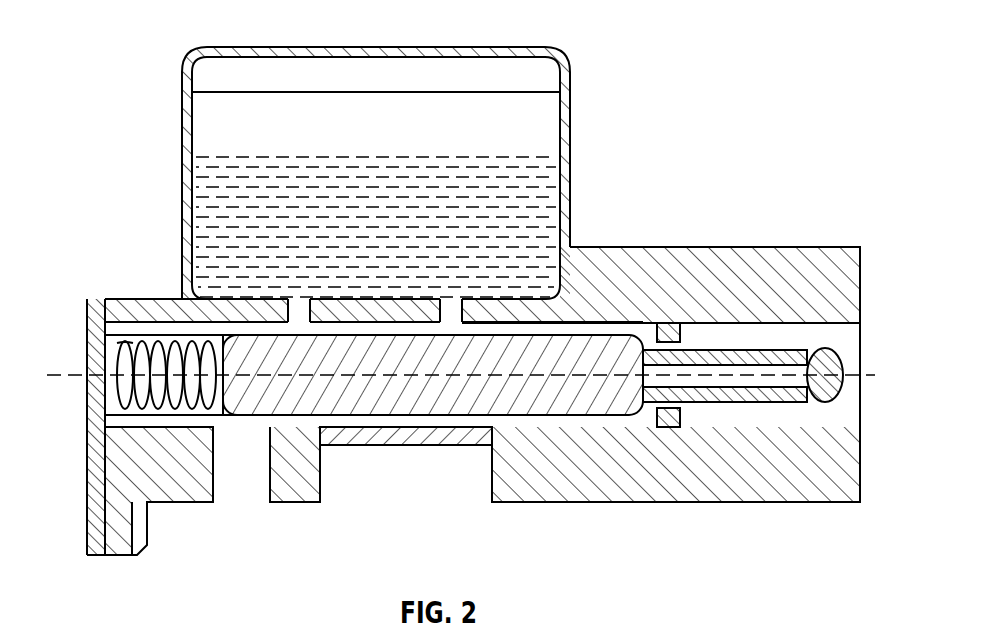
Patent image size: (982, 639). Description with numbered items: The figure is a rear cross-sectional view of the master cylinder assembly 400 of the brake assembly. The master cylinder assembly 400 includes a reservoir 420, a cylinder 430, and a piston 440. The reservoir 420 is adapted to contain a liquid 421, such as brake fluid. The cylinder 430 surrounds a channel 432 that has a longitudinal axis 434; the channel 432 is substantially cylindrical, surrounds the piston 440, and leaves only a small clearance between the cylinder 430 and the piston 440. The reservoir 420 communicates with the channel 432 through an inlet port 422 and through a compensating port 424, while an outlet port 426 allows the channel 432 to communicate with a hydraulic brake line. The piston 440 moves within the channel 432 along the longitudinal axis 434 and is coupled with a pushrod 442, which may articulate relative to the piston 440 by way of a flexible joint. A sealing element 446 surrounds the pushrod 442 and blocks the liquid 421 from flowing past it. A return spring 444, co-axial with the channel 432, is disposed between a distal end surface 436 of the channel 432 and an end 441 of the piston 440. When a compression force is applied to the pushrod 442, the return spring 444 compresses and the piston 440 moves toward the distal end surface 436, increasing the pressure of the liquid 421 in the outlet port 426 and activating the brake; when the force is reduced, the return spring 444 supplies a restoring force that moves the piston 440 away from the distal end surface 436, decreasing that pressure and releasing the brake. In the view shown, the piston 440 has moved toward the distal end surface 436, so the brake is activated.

The master cylinder assembly 400 is at (772, 30).
The reservoir 420 is at (183, 120).
The liquid 421 is at (260, 212).
The inlet port 422 is at (298, 305).
The compensating port 424 is at (450, 305).
The outlet port 426 is at (231, 493).
The cylinder 430 is at (420, 428).
The channel 432 is at (580, 325).
The longitudinal axis 434 is at (68, 375).
The distal end surface 436 is at (108, 395).
The piston 440 is at (340, 407).
The end 441 is at (225, 400).
The pushrod 442 is at (700, 367).
The return spring 444 is at (120, 358).
The sealing element 446 is at (758, 358).